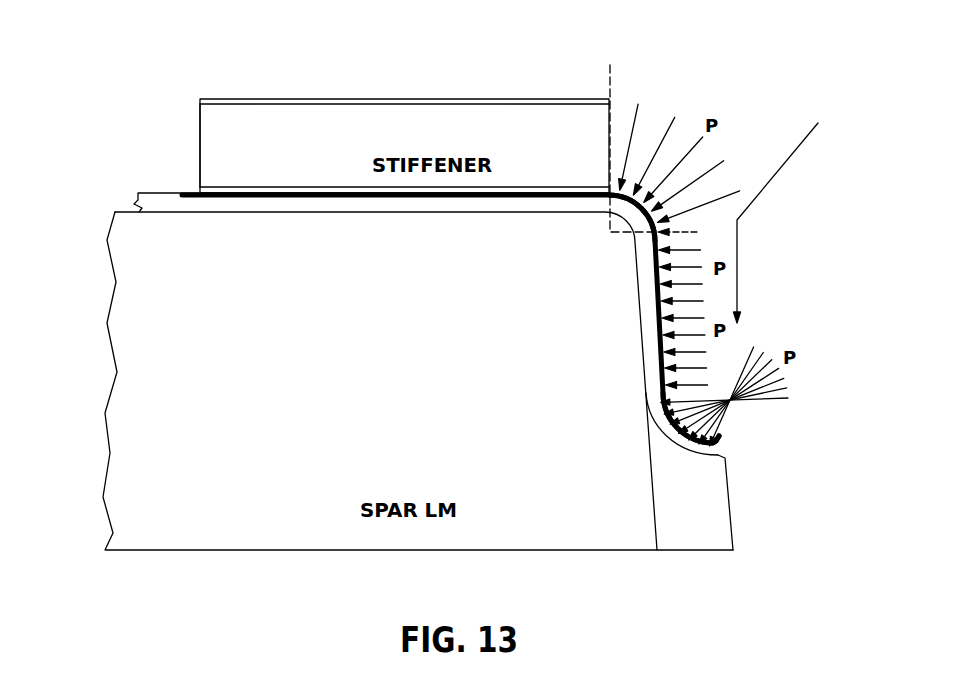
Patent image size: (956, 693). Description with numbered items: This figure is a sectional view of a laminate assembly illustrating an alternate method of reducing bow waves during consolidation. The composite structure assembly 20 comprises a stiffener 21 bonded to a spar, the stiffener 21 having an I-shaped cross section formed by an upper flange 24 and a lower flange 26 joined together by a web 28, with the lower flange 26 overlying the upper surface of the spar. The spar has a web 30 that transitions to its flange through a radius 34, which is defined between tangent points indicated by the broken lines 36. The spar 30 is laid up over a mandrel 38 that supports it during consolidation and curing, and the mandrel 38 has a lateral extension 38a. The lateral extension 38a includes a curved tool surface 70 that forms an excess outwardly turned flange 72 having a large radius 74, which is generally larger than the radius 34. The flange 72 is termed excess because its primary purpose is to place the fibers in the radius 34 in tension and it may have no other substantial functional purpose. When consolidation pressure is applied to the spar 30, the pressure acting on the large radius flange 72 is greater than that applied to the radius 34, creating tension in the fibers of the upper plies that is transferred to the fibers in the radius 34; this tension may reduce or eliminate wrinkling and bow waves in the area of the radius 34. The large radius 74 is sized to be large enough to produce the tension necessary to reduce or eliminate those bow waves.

The composite structure assembly 20 is at (158, 78).
The stiffener 21 is at (312, 62).
The upper flange 24 is at (445, 104).
The lower flange 26 is at (218, 190).
The web 28 is at (237, 130).
The web 30 is at (160, 203).
The radius 34 is at (622, 207).
The broken lines 36 is at (610, 81).
The mandrel 38 is at (290, 358).
The lateral extension 38a is at (708, 512).
The curved tool surface 70 is at (697, 460).
The excess outwardly turned flange 72 is at (723, 438).
The large radius 74 is at (706, 432).